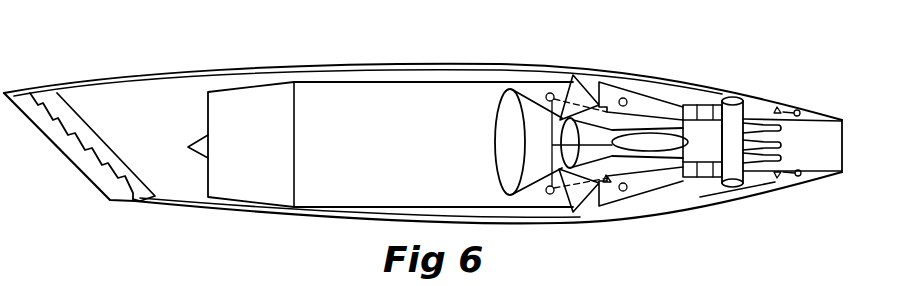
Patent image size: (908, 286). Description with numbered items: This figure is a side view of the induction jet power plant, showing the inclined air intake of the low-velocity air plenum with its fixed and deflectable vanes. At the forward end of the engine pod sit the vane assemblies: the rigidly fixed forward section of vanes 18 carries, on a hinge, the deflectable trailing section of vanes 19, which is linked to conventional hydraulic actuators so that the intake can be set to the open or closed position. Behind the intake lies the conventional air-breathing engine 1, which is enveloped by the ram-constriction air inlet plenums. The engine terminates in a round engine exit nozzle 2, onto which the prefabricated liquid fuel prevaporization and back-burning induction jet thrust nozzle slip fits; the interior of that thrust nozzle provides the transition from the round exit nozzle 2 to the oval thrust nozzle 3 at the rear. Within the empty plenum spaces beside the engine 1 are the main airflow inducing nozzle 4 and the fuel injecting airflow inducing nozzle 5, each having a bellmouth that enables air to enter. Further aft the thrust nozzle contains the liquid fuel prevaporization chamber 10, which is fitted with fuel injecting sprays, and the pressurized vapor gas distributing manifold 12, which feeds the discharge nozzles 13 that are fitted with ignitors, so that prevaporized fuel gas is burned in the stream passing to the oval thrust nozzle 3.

The engine 1 is at (380, 144).
The round engine exit nozzle 2 is at (692, 106).
The oval thrust nozzle 3 is at (842, 126).
The main airflow inducing nozzle 4 is at (532, 100).
The fuel injecting airflow inducing nozzle 5 is at (588, 115).
The liquid fuel prevaporization chamber 10 is at (765, 107).
The pressurized vapor gas distributing manifold 12 is at (733, 97).
The discharge nozzle 13 is at (783, 145).
The rigidly fixed forward section of vanes 18 is at (78, 168).
The deflectable trailing section of vanes 19 is at (83, 130).